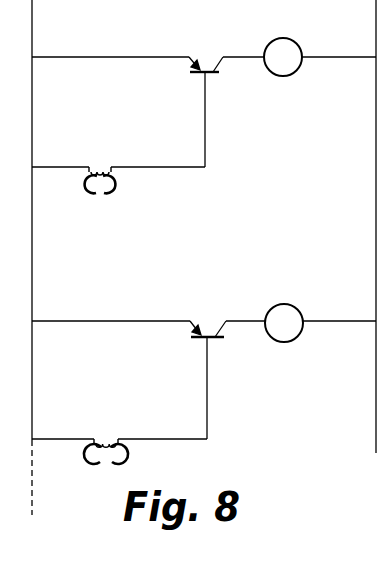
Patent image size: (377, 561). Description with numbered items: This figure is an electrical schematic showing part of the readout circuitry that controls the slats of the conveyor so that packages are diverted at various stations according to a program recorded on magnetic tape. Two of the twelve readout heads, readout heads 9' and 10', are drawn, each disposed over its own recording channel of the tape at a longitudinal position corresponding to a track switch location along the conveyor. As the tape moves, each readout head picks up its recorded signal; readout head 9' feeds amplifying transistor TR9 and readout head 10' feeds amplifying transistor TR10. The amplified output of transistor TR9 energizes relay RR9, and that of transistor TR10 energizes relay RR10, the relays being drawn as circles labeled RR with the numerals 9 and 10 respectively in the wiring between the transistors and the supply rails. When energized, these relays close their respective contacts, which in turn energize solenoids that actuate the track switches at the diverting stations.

The readout head 9' is at (86, 198).
The readout head 10' is at (118, 437).
The relay coil of relay RR9 9 is at (86, 198).
The relay coil of relay RR10 10 is at (118, 437).
The amplifying transistor TR9 is at (208, 51).
The amplifying transistor TR10 is at (202, 314).
The relay RR9 is at (283, 57).
The relay RR10 is at (284, 323).